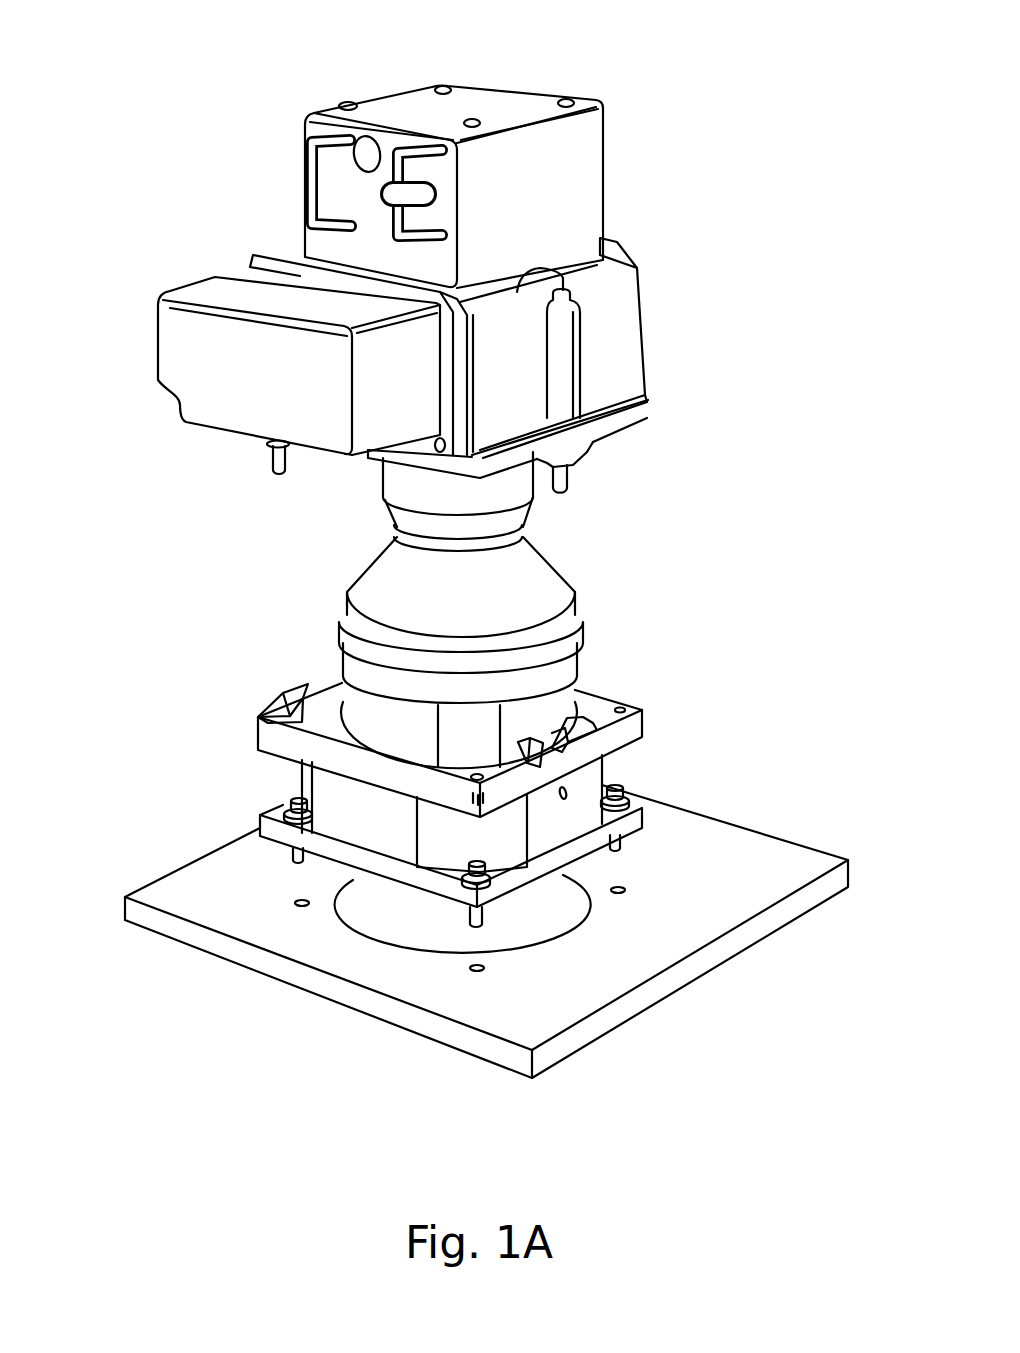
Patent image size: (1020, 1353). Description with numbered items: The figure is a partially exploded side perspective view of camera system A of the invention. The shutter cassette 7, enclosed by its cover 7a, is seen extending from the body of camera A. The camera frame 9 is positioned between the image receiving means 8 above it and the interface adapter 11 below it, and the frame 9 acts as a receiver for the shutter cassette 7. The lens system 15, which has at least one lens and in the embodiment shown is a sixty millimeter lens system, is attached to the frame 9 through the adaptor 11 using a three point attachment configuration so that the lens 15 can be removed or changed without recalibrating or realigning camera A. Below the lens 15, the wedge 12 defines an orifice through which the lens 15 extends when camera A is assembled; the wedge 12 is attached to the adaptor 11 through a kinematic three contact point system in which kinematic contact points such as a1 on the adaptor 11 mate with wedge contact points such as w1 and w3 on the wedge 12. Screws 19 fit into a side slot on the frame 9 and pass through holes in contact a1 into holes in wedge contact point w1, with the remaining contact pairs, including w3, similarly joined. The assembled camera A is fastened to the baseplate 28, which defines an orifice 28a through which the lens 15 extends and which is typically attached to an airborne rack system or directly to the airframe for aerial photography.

The camera system A is at (778, 68).
The shutter cassette 7 is at (112, 318).
The cover 7a is at (230, 398).
The image receiving means 8 is at (377, 113).
The camera frame 9 is at (645, 313).
The interface adapter 11 is at (650, 407).
The kinematic contact point a1 is at (568, 450).
The wedge 12 is at (645, 723).
The lens system 15 is at (362, 567).
The screws 19 is at (296, 797).
The baseplate 28 is at (745, 827).
The orifice 28a is at (523, 930).
The kinematic contact point w1 is at (603, 770).
The kinematic contact point w3 is at (283, 700).